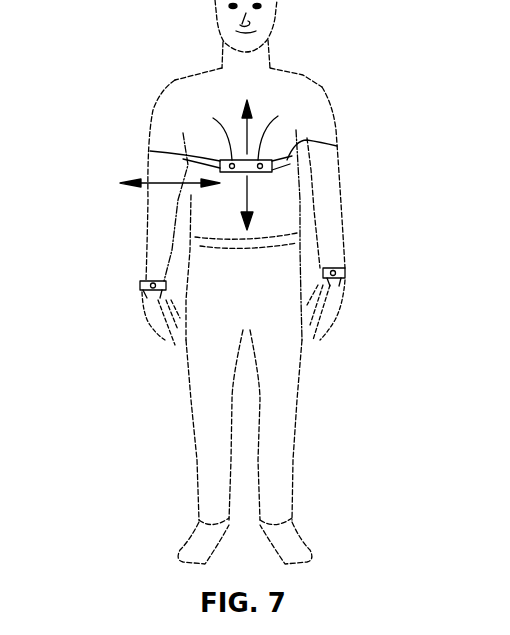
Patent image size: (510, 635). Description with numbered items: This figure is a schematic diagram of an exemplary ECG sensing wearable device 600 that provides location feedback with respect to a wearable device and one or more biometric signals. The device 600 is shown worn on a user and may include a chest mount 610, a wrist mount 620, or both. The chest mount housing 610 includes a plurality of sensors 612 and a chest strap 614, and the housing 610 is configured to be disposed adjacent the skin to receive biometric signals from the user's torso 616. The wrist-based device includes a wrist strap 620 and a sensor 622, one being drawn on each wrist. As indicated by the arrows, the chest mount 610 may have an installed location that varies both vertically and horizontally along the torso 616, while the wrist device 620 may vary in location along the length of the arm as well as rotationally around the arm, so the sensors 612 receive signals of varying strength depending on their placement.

The ECG sensing wearable device 600 is at (135, 82).
The chest mount housing 610 is at (272, 171).
The sensors 612 is at (246, 130).
The chest strap 614 is at (337, 146).
The torso 616 is at (277, 210).
The wrist strap 620 is at (143, 281).
The sensor 622 is at (148, 293).